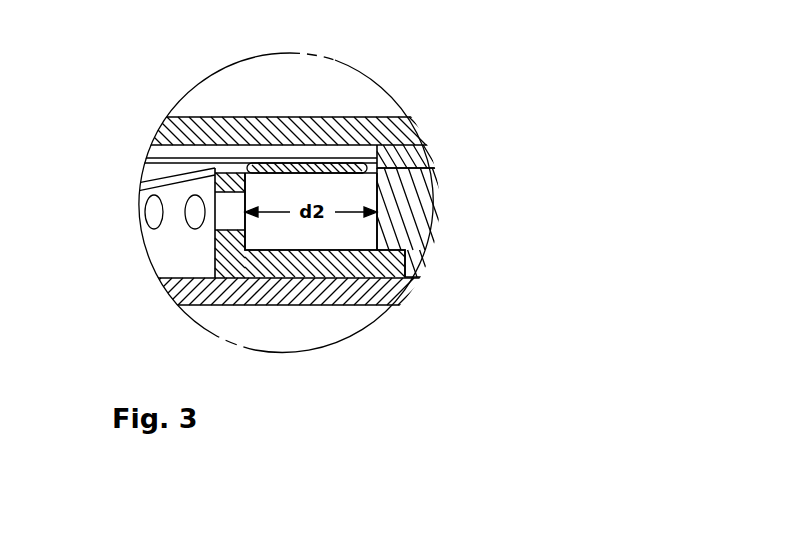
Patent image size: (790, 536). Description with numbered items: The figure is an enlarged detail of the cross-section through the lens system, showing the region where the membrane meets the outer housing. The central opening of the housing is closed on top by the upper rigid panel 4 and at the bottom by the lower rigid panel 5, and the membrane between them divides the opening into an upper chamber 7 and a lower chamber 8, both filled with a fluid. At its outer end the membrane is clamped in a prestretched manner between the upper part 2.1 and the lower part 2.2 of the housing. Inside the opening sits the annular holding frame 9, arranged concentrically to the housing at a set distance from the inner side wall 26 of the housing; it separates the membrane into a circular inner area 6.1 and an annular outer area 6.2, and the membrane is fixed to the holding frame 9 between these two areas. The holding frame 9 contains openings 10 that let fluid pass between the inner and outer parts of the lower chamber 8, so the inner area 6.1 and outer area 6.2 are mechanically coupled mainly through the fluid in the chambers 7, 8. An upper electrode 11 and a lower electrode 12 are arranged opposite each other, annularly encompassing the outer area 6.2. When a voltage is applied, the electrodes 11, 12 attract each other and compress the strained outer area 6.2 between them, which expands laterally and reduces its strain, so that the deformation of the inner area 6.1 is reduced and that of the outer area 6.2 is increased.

The upper part of the housing 2.1 is at (415, 163).
The lower part of the housing 2.2 is at (398, 218).
The upper rigid panel 4 is at (177, 140).
The lower rigid panel 5 is at (192, 290).
The inner area of the membrane 6.1 is at (173, 178).
The outer area of the membrane 6.2 is at (283, 165).
The upper chamber 7 is at (167, 155).
The lower chamber 8 is at (338, 222).
The annular holding frame 9 is at (220, 255).
The openings 10 is at (227, 210).
The upper electrode 11 is at (340, 177).
The lower electrode 12 is at (345, 177).
The inner side wall of the housing 26 is at (372, 169).